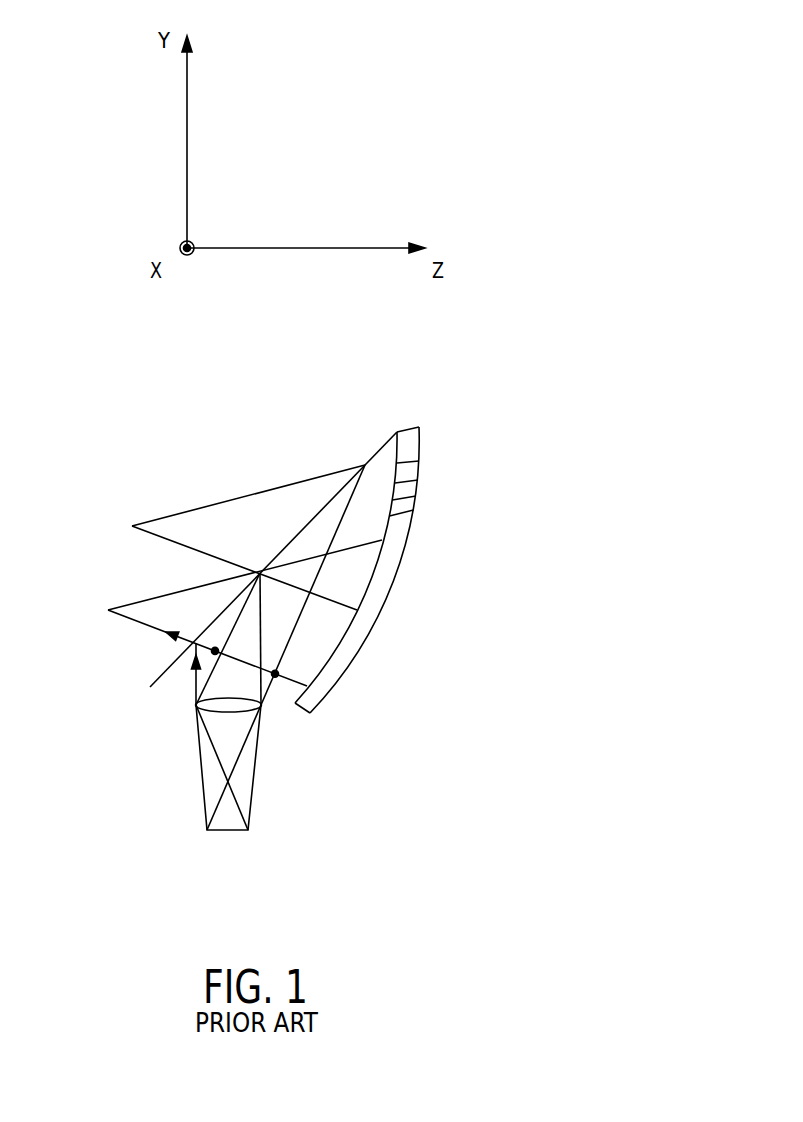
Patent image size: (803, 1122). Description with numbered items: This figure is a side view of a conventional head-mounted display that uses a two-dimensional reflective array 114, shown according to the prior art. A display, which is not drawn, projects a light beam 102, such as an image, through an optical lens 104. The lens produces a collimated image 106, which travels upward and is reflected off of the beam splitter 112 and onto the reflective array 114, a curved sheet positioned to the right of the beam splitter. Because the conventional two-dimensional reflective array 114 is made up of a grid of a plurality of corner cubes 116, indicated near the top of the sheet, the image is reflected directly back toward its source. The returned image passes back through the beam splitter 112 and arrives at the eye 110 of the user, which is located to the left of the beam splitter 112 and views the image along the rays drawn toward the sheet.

The light beam 102 is at (255, 775).
The optical lens 104 is at (193, 705).
The collimated image 106 is at (192, 681).
The eye 110 is at (103, 574).
The beam splitter 112 is at (298, 514).
The two-dimensional reflective array 114 is at (408, 548).
The corner cubes 116 is at (420, 487).